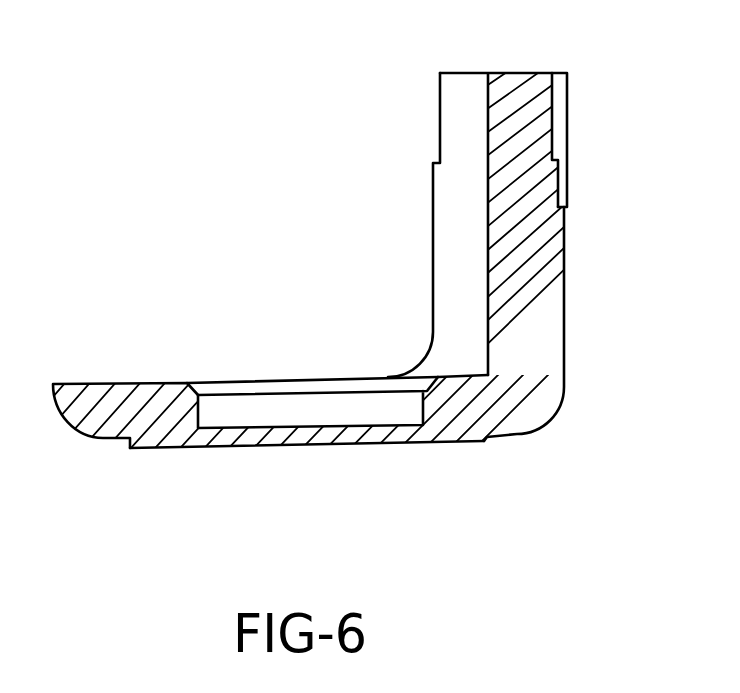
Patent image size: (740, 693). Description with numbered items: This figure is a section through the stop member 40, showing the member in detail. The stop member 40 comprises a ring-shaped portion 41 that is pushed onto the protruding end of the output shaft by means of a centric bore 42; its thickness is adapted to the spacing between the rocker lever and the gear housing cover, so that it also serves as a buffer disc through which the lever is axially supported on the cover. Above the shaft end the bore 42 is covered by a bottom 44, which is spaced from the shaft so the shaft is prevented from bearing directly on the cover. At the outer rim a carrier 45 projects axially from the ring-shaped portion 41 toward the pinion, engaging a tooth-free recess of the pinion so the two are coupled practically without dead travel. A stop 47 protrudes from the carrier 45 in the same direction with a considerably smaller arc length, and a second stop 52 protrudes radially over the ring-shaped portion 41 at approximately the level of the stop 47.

The stop member 40 is at (132, 469).
The ring-shaped portion 41 is at (95, 390).
The centric bore 42 is at (248, 408).
The bottom 44 is at (247, 438).
The carrier 45 is at (543, 366).
The stop 47 is at (521, 88).
The second stop 52 is at (560, 135).